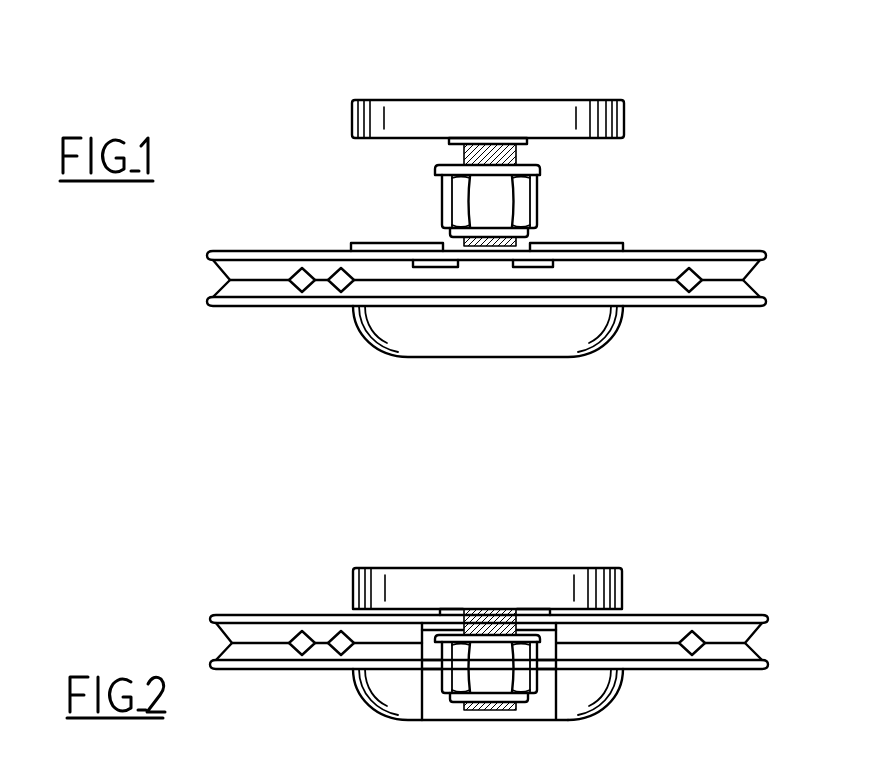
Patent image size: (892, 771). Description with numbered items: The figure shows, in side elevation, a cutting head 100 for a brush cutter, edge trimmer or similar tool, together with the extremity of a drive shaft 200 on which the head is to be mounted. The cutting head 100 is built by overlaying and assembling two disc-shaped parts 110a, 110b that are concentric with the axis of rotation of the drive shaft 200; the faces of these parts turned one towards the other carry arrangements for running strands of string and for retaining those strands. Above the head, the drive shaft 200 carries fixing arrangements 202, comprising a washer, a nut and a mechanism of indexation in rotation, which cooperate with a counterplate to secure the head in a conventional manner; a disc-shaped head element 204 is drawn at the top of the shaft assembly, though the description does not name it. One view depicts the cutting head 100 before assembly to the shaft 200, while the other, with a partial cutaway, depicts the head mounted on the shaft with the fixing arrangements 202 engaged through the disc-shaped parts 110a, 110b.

In FIG. 1, the cutting head 100 is at (728, 319).
In FIG. 2, the cutting head 100 is at (712, 681).
In FIG. 1, the disc-shaped part 110a is at (660, 270).
In FIG. 2, the disc-shaped part 110a is at (653, 630).
In FIG. 1, the disc-shaped part 110b is at (648, 290).
In FIG. 2, the disc-shaped part 110b is at (650, 650).
In FIG. 1, the drive shaft 200 is at (460, 187).
In FIG. 2, the drive shaft 200 is at (458, 604).
In FIG. 1, the fixing arrangements 202 is at (550, 193).
In FIG. 2, the fixing arrangements 202 is at (487, 668).
In FIG. 1, the head disc 204 is at (504, 122).
In FIG. 2, the head disc 204 is at (487, 588).